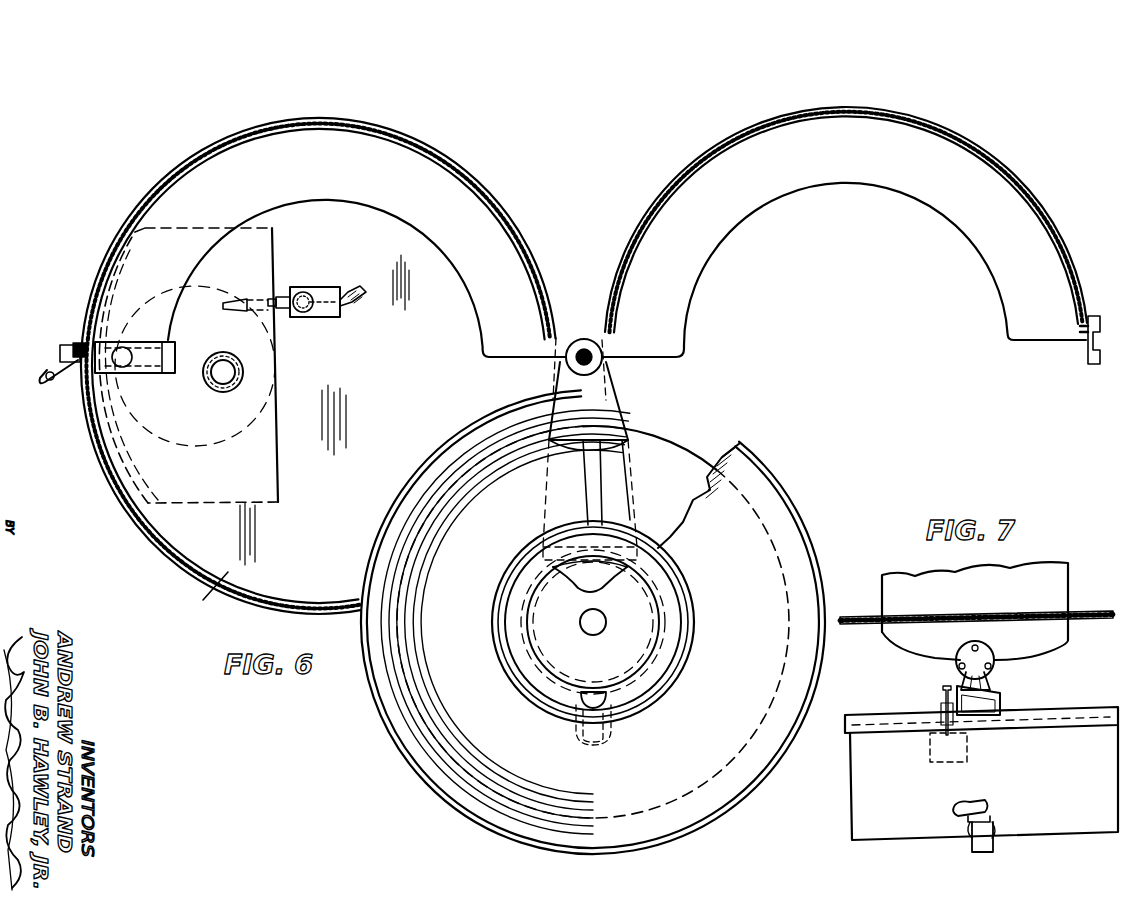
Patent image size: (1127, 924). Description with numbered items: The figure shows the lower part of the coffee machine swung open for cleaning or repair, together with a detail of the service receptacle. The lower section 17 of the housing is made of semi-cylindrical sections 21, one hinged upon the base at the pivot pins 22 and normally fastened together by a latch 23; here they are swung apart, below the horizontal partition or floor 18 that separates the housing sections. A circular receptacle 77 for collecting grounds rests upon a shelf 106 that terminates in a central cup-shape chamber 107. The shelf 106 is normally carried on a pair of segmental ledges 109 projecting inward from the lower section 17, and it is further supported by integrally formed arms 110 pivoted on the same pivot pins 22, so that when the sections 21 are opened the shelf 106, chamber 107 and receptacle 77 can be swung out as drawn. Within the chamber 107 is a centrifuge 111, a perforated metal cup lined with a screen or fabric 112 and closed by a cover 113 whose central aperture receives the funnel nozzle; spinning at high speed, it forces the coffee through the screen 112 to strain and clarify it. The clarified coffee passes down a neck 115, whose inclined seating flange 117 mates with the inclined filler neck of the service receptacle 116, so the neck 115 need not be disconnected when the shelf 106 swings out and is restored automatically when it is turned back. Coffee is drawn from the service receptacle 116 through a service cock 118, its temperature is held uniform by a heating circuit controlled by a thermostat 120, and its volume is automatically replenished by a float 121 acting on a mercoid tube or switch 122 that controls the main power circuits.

In FIG. 6, the lower section of the machine housing 17 is at (204, 594).
In FIG. 6, the horizontal partition or floor 18 is at (40, 386).
In FIG. 6, the semi-cylindrical sections 21 is at (489, 199).
In FIG. 6, the pivot pins 22 is at (605, 366).
In FIG. 6, the latch 23 is at (1086, 356).
In FIG. 6, the circular receptacle 77 is at (772, 508).
In FIG. 6, the shelf 106 is at (665, 452).
In FIG. 7, the shelf 106 is at (1085, 622).
In FIG. 6, the cup-shape chamber 107 is at (645, 548).
In FIG. 7, the cup-shape chamber 107 is at (1055, 592).
In FIG. 6, the segmental ledges 109 is at (486, 290).
In FIG. 6, the arms 110 is at (607, 410).
In FIG. 6, the centrifuge 111 is at (606, 561).
In FIG. 6, the screen or fabric 112 is at (606, 570).
In FIG. 6, the cover 113 is at (565, 665).
In FIG. 7, the neck 115 is at (992, 676).
In FIG. 6, the service receptacle 116 is at (267, 420).
In FIG. 7, the service receptacle 116 is at (865, 772).
In FIG. 7, the inclined seating flange 117 is at (1002, 693).
In FIG. 7, the service cock 118 is at (995, 850).
In FIG. 6, the thermostat 120 is at (316, 290).
In FIG. 7, the float 121 is at (946, 765).
In FIG. 6, the mercoid tube or switch 122 is at (175, 352).